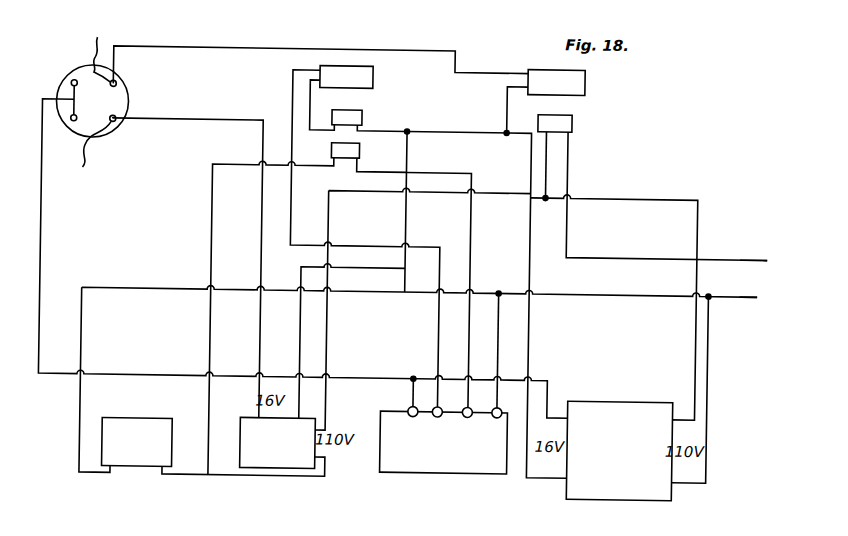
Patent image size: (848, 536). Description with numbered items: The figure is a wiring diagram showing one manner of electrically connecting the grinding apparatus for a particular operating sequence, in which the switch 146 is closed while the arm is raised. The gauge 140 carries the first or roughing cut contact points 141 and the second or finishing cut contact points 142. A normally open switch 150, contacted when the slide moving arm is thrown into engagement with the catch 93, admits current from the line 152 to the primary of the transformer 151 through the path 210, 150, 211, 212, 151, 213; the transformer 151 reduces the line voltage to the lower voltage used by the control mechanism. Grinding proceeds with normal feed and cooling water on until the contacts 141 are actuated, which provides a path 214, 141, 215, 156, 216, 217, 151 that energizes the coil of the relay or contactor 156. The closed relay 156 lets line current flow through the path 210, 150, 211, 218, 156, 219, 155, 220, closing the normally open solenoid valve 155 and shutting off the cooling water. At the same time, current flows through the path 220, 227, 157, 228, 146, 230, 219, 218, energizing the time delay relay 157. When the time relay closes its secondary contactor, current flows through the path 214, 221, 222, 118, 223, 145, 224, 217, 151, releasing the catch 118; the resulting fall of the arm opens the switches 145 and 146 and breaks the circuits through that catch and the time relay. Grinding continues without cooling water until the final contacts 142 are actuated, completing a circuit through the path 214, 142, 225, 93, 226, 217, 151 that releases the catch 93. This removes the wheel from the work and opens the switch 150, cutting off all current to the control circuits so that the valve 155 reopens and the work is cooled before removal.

The catch 93 is at (582, 81).
The catch 118 is at (370, 80).
The gauge 140 is at (66, 76).
The first or roughing cut contact points 141 is at (81, 172).
The second or finishing cut contact points 142 is at (94, 42).
The toggle switch 145 is at (373, 110).
The toggle switch 146 is at (358, 152).
The fifth switch 150 is at (570, 121).
The transformer 151 is at (619, 451).
The line 152 is at (740, 262).
The solenoid valve 155 is at (137, 441).
The relay or contactor 156 is at (278, 442).
The time delay relay 157 is at (444, 440).
The path 210 is at (566, 178).
The path 211 is at (544, 153).
The path 212 is at (697, 222).
The path 213 is at (709, 381).
The path 214 is at (40, 254).
The path 215 is at (183, 122).
The path 216 is at (405, 157).
The path 217 is at (462, 132).
The path 218 is at (521, 192).
The path 219 is at (240, 478).
The path 220 is at (362, 292).
The path 221 is at (415, 395).
The path 222 is at (290, 98).
The path 223 is at (307, 126).
The path 224 is at (402, 131).
The path 225 is at (269, 50).
The path 226 is at (505, 109).
The path 227 is at (499, 346).
The path 228 is at (470, 222).
The path 230 is at (211, 242).